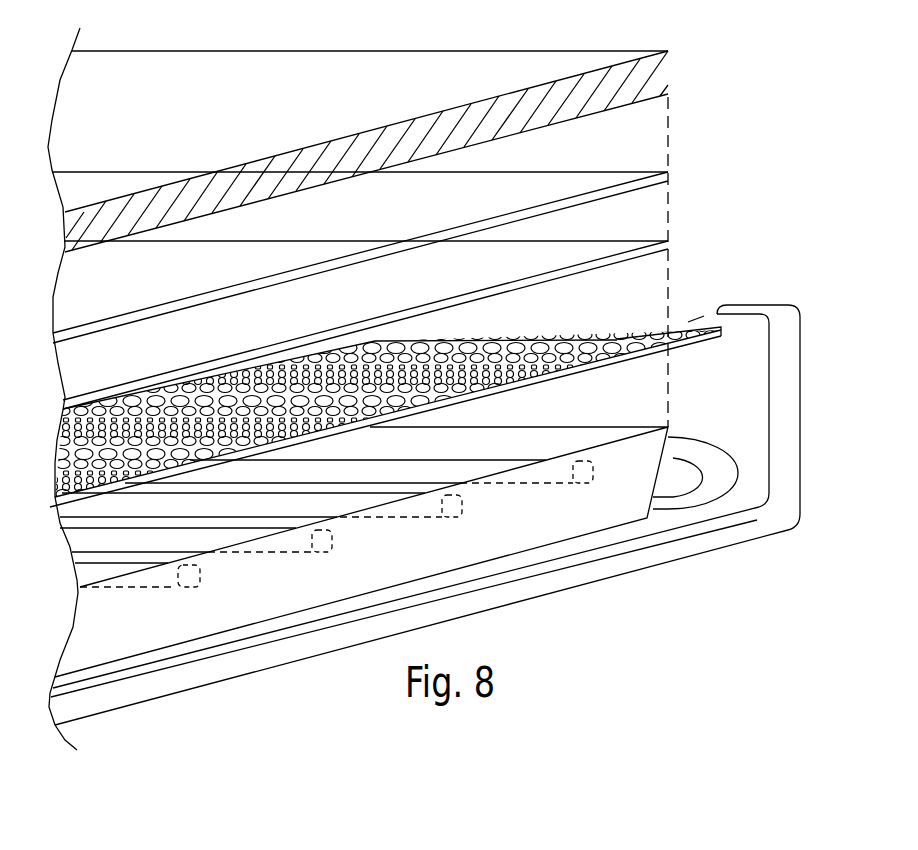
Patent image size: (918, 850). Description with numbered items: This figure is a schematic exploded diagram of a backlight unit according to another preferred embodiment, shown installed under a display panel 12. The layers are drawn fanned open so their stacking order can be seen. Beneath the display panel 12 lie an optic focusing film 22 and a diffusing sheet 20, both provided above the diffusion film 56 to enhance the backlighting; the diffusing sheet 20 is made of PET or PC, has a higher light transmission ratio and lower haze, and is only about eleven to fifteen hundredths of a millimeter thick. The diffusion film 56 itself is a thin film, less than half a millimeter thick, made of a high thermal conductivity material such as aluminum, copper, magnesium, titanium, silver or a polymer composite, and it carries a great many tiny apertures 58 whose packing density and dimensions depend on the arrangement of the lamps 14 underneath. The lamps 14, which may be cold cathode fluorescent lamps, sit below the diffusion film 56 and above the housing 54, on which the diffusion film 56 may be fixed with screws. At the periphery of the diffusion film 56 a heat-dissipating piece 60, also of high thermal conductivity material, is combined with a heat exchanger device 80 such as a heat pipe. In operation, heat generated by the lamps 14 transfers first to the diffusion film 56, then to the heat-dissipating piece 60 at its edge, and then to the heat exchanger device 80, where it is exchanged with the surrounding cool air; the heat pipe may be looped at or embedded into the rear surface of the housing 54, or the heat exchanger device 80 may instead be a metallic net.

The display panel 12 is at (653, 77).
The optic focusing film 22 is at (590, 190).
The diffusing sheet 20 is at (590, 258).
The heat-dissipating piece 60 is at (653, 338).
The diffusion film 56 is at (532, 338).
The apertures 58 is at (58, 447).
The lamps 14 is at (482, 470).
The housing 54 is at (82, 640).
The heat exchanger device 80 is at (792, 387).